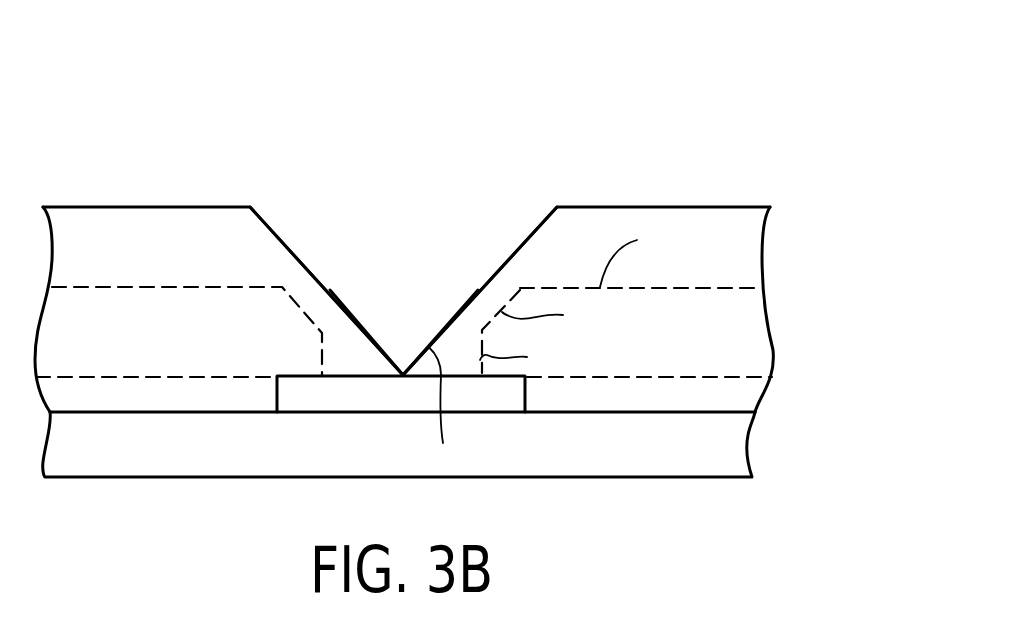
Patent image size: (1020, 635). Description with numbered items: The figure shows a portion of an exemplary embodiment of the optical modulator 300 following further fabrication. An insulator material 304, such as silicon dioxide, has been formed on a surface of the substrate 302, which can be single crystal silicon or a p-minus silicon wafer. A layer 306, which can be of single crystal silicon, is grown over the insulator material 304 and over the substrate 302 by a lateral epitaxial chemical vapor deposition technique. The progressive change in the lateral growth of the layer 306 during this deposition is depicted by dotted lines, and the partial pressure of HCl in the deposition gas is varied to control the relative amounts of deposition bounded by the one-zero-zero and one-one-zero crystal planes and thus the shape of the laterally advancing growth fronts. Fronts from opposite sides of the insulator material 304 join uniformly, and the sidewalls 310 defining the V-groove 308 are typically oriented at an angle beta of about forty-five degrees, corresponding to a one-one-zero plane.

The optical modulator 300 is at (620, 93).
The substrate 302 is at (748, 447).
The insulator material 304 is at (310, 397).
The layer 306 is at (762, 288).
The V-groove 308 is at (425, 234).
The sidewalls 310 is at (478, 290).